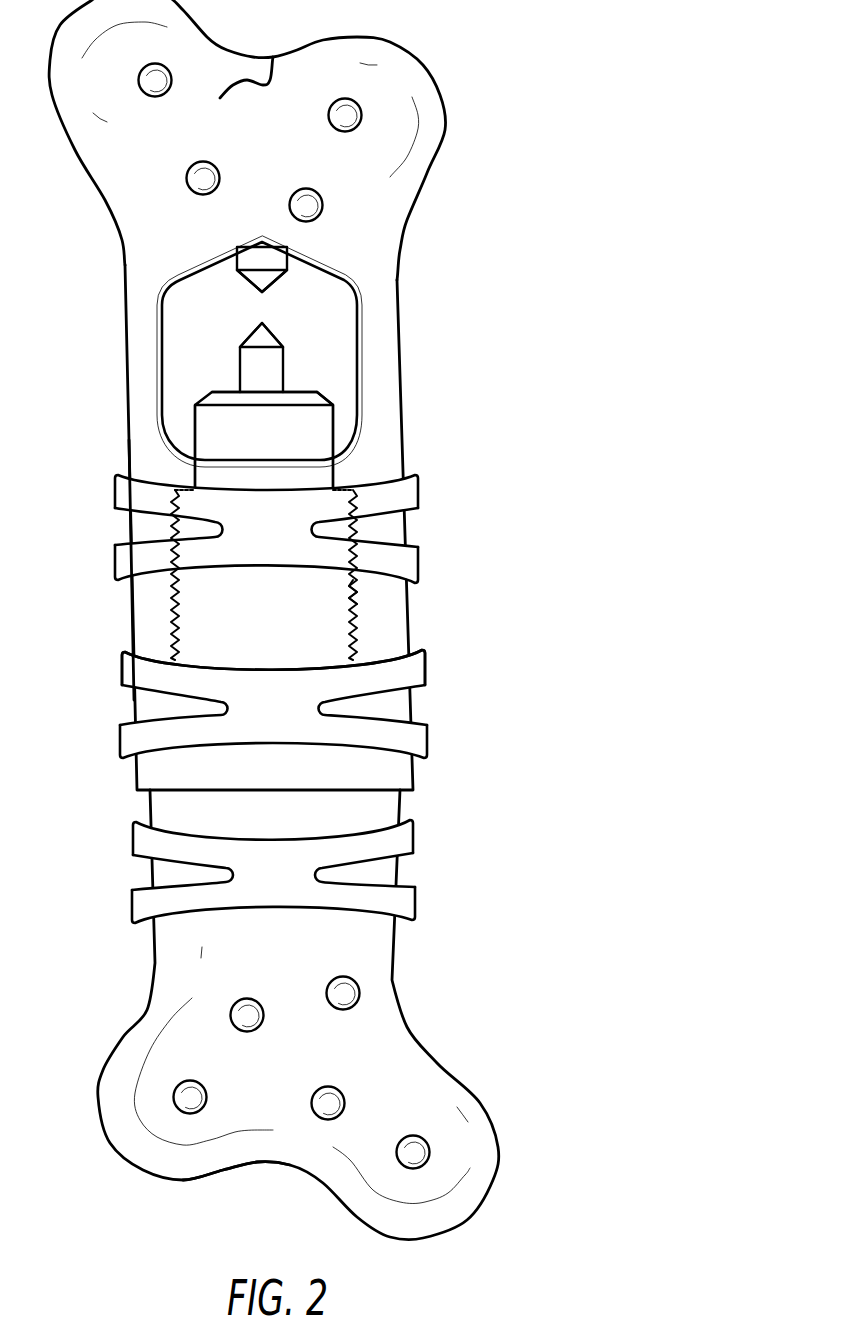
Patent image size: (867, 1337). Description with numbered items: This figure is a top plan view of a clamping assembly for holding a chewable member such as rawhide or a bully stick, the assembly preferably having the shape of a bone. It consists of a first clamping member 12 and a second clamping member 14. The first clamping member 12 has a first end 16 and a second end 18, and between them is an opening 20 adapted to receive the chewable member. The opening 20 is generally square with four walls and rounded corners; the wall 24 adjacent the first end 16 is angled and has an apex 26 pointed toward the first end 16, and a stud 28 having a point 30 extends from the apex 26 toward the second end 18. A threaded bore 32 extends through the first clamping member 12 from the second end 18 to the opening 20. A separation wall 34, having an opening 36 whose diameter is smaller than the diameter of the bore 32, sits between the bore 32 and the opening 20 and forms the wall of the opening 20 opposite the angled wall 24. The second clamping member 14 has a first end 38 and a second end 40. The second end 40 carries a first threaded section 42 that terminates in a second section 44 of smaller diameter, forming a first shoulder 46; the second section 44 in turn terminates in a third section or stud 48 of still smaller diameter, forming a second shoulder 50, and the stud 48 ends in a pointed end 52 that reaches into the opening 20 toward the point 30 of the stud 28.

The first clamping member 12 is at (337, 170).
The second clamping member 14 is at (297, 817).
The first end 16 is at (232, 91).
The second end 18 is at (150, 660).
The opening 20 is at (367, 338).
The angled wall 24 is at (320, 258).
The apex 26 is at (267, 257).
The stud 28 is at (290, 209).
The point 30 is at (257, 278).
The threaded bore 32 is at (362, 597).
The separation wall 34 is at (347, 470).
The opening 36 is at (303, 457).
The first end 38 is at (238, 1162).
The second end 40 is at (163, 658).
The first threaded section 42 is at (274, 622).
The second section 44 is at (274, 448).
The first shoulder 46 is at (183, 487).
The stud 48 is at (268, 377).
The second shoulder 50 is at (227, 400).
The pointed end 52 is at (267, 327).